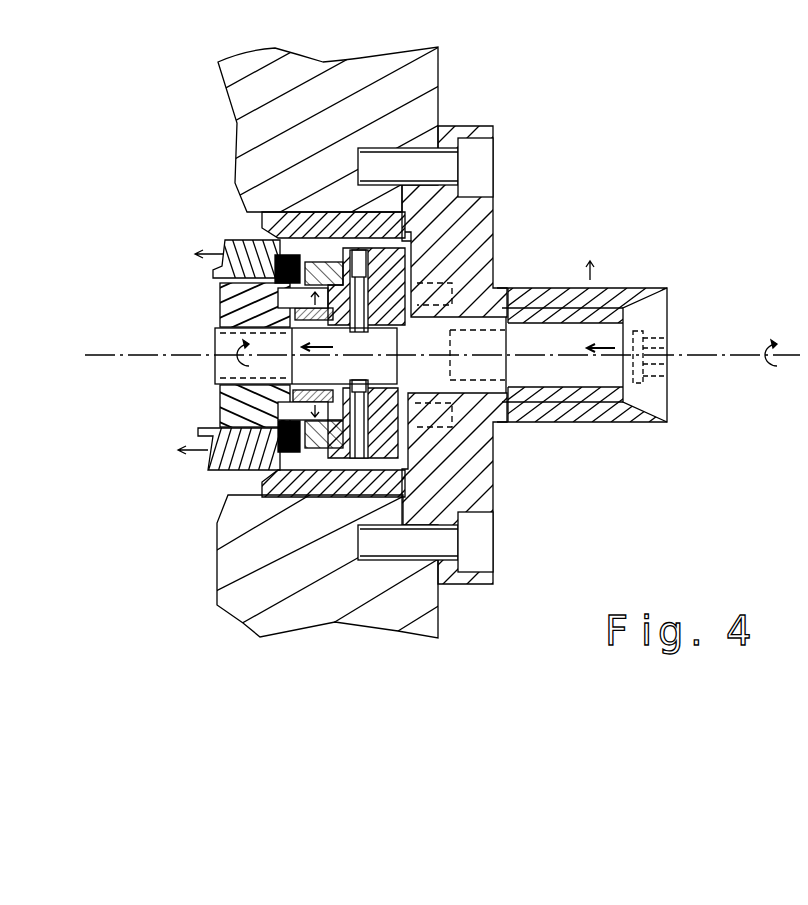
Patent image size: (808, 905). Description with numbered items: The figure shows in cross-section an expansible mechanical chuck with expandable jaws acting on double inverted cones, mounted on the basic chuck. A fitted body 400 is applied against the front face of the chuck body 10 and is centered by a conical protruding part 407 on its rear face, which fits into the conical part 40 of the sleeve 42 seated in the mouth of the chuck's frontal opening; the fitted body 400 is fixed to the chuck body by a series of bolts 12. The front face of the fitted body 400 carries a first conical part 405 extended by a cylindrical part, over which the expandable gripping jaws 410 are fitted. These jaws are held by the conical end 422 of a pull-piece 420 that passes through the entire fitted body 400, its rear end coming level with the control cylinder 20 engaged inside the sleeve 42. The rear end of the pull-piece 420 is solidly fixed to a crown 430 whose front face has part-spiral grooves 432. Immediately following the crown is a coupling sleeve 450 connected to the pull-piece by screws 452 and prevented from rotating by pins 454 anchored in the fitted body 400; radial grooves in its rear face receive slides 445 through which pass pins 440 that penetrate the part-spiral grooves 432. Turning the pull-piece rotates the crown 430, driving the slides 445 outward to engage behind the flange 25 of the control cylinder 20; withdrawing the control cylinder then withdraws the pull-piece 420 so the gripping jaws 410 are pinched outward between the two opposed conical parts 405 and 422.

The chuck body 10 is at (410, 80).
The bolts 12 is at (480, 553).
The control cylinder 20 is at (218, 272).
The flange 25 is at (257, 230).
The conical part 40 is at (425, 233).
The sleeve 42 is at (257, 229).
The fitted body 400 is at (468, 488).
The first conical part 405 is at (518, 424).
The conical protruding part 407 is at (440, 258).
The expandable gripping jaws 410 is at (620, 290).
The pull-piece 420 is at (222, 345).
The conical end 422 is at (680, 307).
The crown 430 is at (220, 390).
The part-spiral grooves 432 is at (220, 307).
The pins 440 is at (218, 412).
The slides 445 is at (258, 472).
The coupling sleeve 450 is at (460, 287).
The screws 452 is at (292, 448).
The pins 454 is at (440, 420).